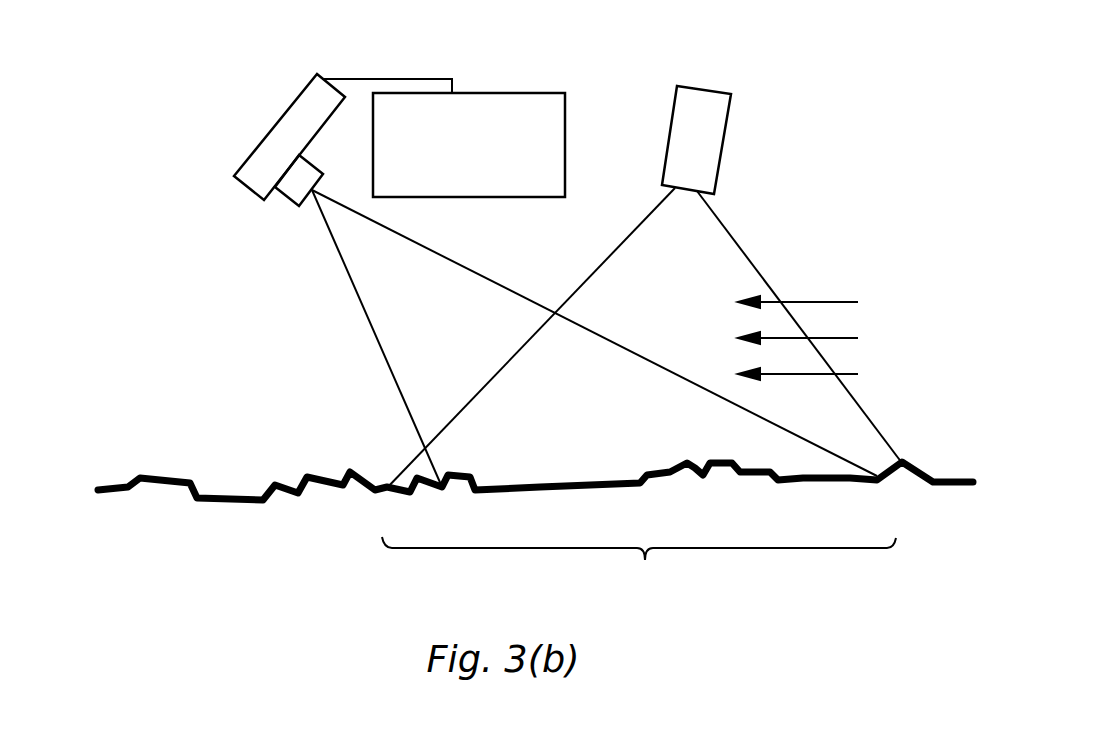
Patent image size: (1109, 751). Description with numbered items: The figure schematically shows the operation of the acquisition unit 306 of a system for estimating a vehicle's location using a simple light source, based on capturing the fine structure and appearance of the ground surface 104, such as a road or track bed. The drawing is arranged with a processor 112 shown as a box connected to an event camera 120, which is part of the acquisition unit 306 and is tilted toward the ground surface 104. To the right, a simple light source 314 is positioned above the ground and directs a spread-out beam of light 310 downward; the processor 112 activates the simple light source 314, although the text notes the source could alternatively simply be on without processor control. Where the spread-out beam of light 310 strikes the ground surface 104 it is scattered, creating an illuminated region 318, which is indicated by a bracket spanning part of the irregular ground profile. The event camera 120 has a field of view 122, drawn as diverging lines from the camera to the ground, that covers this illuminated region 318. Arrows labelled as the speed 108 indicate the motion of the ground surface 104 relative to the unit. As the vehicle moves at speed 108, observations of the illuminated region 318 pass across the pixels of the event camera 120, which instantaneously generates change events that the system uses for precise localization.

The acquisition unit 306 is at (170, 158).
The event camera 120 is at (283, 130).
The processor 112 is at (443, 157).
The simple light source 314 is at (712, 90).
The spread-out beam of light 310 is at (657, 265).
The field of view 122 is at (373, 292).
The speed 108 is at (829, 338).
The ground surface 104 is at (255, 503).
The illuminated region 318 is at (639, 568).